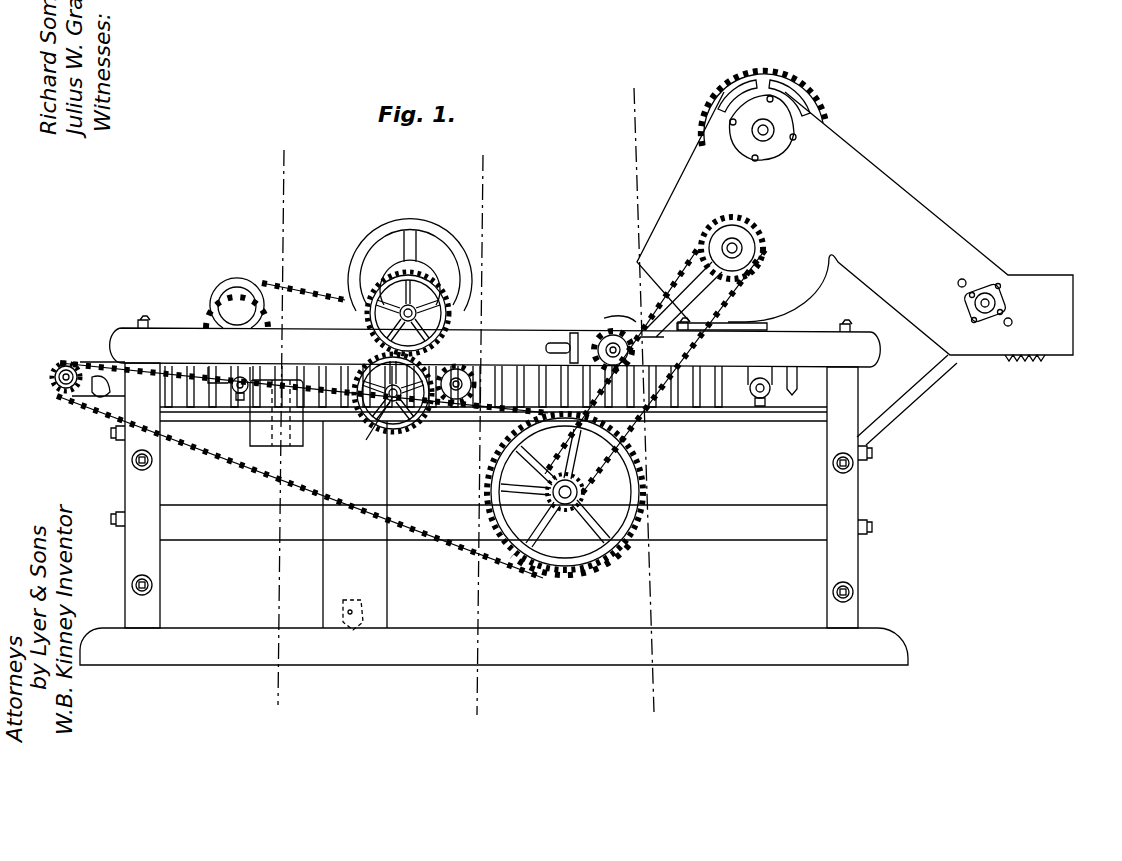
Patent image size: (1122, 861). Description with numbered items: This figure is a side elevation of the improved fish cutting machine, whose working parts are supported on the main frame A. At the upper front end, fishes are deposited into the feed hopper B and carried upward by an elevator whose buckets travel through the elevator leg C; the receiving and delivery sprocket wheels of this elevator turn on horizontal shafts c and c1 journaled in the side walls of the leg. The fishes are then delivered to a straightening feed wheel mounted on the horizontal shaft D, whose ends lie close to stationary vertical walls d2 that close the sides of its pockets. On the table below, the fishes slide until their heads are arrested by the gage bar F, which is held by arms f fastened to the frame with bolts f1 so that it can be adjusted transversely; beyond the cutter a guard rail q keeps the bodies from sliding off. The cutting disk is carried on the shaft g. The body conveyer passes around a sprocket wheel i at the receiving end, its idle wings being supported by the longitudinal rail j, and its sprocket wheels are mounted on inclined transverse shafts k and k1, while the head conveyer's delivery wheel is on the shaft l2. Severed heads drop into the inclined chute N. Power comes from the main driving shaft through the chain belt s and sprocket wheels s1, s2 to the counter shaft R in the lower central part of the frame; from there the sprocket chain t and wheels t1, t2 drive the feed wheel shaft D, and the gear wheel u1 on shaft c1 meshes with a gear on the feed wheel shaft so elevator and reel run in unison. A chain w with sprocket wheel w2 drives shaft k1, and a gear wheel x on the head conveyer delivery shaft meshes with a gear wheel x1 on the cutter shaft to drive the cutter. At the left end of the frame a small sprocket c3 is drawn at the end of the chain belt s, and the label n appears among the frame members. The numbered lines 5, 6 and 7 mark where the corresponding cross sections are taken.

The main frame A is at (780, 618).
The feed hopper B is at (1030, 300).
The elevator leg C is at (855, 226).
The horizontal shaft D is at (740, 245).
The gage or bar F is at (567, 330).
The inclined chute N is at (353, 601).
The counter shaft R is at (565, 492).
The horizontal shaft c is at (980, 308).
The horizontal shaft c1 is at (772, 137).
The sprocket wheel c3 is at (56, 367).
The stationary vertical walls d2 is at (681, 274).
The arms or brackets f is at (622, 314).
The bolts or screws f1 is at (610, 317).
The shaft g is at (370, 306).
The sprocket wheel i is at (530, 370).
The longitudinal supporting rail j is at (795, 422).
The transverse shaft k is at (766, 380).
The transverse shaft k1 is at (238, 393).
The transverse shaft l2 is at (371, 430).
The block n is at (276, 413).
The guard rail q is at (263, 308).
The chain belt s is at (270, 465).
The sprocket wheel s1 is at (78, 398).
The sprocket wheel s2 is at (650, 497).
The sprocket chain t is at (632, 425).
The sprocket wheel t1 is at (585, 493).
The sprocket wheel t2 is at (762, 256).
The gear wheel u1 is at (805, 86).
The chain w is at (318, 295).
The sprocket wheel w2 is at (232, 283).
The gear wheel x is at (406, 430).
The gear wheel x1 is at (450, 315).
The section line 5 is at (642, 398).
The section line 6 is at (278, 430).
The section line 7 is at (477, 435).